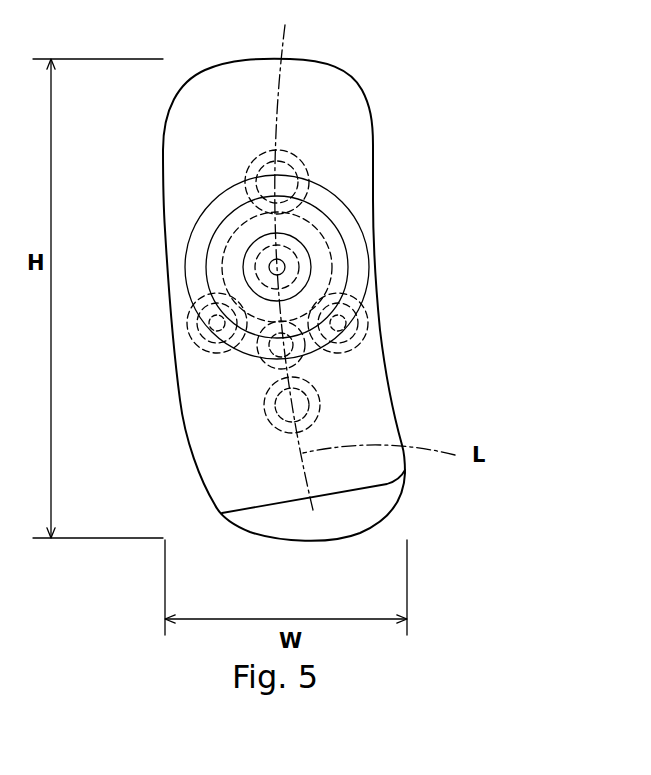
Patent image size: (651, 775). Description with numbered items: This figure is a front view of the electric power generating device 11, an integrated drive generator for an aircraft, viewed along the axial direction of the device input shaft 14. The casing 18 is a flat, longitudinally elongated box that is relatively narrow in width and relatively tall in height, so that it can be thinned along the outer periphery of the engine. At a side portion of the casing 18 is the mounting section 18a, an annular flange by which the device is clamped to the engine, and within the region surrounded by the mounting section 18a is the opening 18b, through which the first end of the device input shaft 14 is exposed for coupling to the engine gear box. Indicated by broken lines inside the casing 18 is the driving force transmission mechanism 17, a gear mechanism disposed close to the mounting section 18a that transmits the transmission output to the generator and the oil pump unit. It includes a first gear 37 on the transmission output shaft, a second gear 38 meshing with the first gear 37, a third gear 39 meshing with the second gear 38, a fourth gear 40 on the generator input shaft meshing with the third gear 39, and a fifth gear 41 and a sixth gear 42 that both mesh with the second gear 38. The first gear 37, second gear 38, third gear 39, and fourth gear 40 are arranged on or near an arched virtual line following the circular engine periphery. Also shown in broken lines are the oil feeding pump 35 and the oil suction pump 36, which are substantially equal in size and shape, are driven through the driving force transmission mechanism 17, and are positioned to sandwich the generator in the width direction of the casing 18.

The electric power generating device 11 is at (158, 147).
The device input shaft 14 is at (288, 252).
The driving force transmission mechanism 17 is at (298, 132).
The casing 18 is at (363, 470).
The mounting section 18a is at (373, 250).
The opening 18b is at (286, 272).
The oil feeding pump 35 is at (332, 351).
The oil suction pump 36 is at (193, 328).
The first gear 37 is at (304, 160).
The second gear 38 is at (303, 216).
The third gear 39 is at (304, 362).
The fourth gear 40 is at (320, 406).
The fifth gear 41 is at (366, 326).
The sixth gear 42 is at (208, 348).